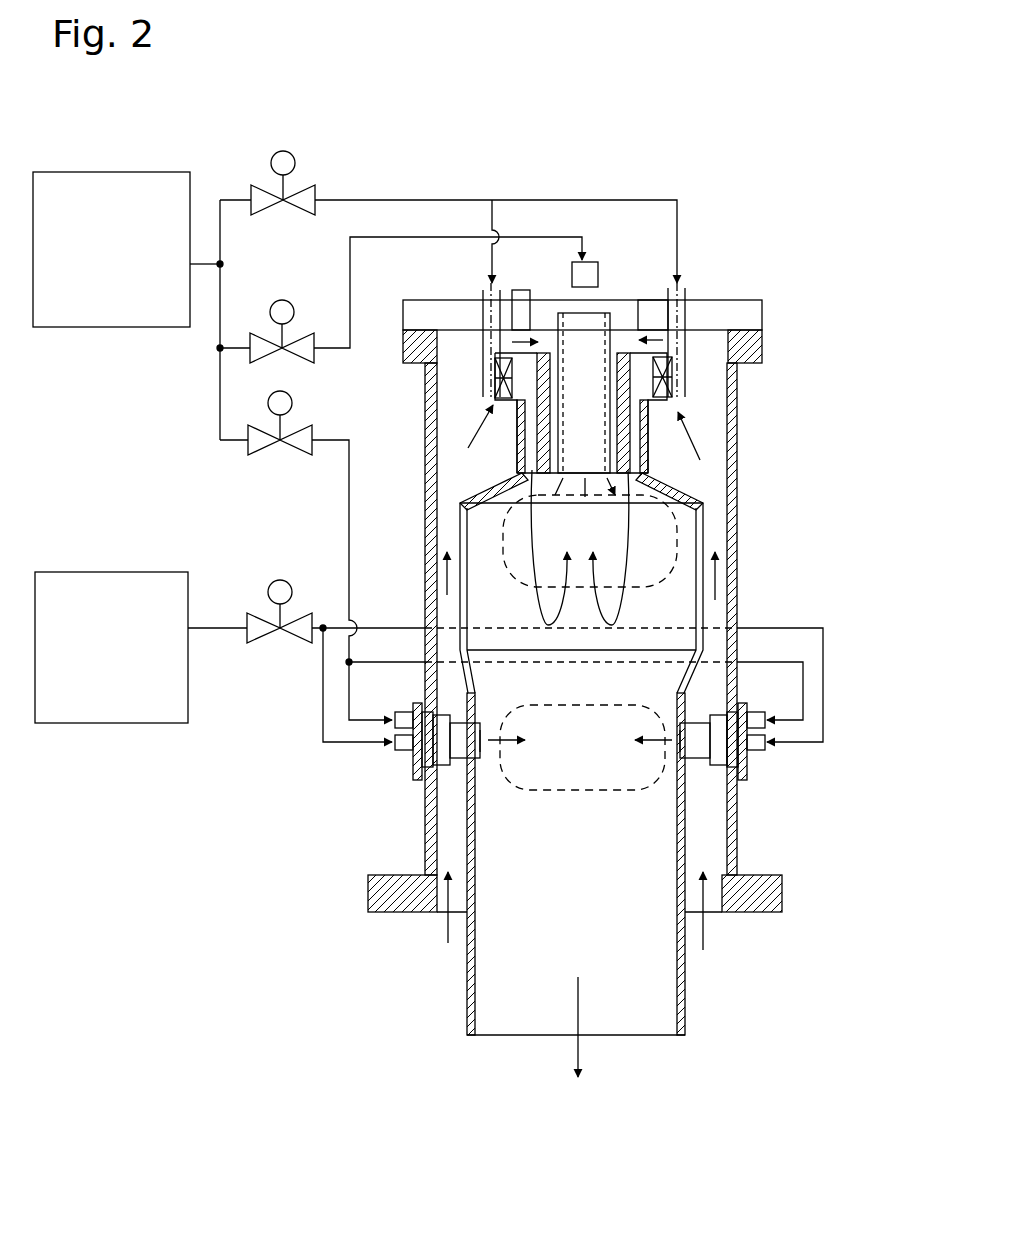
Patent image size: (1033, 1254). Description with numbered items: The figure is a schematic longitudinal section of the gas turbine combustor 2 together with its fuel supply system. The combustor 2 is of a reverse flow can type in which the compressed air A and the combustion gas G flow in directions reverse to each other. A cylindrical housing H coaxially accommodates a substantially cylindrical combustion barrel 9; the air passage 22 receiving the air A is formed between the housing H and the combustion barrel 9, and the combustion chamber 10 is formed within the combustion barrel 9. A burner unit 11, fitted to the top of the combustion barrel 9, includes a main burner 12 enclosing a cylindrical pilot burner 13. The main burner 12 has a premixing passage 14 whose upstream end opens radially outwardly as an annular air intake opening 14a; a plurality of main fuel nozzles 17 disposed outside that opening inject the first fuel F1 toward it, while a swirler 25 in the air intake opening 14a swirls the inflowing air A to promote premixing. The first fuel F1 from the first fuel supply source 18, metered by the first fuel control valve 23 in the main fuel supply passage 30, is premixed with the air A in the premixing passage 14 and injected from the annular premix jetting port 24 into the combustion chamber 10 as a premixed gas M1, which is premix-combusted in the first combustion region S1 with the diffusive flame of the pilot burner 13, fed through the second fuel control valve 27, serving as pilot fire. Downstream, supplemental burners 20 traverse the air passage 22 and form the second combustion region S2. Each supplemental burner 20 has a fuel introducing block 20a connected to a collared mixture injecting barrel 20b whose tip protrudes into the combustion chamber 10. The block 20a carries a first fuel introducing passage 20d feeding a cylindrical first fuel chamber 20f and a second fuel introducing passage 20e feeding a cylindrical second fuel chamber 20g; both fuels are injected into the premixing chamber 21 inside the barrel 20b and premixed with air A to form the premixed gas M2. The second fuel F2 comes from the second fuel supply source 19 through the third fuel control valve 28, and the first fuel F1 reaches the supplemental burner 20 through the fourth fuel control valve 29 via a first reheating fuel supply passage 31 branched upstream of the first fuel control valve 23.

The combustor 2 is at (724, 299).
The combustion barrel 9 is at (737, 532).
The combustion chamber 10 is at (600, 690).
The burner unit 11 is at (373, 472).
The main burner 12 is at (522, 460).
The pilot burner 13 is at (535, 447).
The premixing passage 14 is at (594, 409).
The air intake opening 14a is at (648, 392).
The main fuel nozzles 17 is at (487, 350).
The first fuel supply source 18 is at (166, 172).
The second fuel supply source 19 is at (166, 572).
The supplemental burner 20 is at (565, 760).
The fuel introducing block 20a is at (425, 770).
The mixture injecting barrel 20b is at (472, 788).
The first fuel introducing passage 20d is at (395, 718).
The second fuel introducing passage 20e is at (398, 745).
The first fuel chamber 20f is at (420, 782).
The second fuel chamber 20g is at (430, 705).
The premixing chamber 21 is at (478, 763).
The air passage 22 is at (688, 836).
The first fuel control valve 23 is at (300, 192).
The premix jetting port 24 is at (462, 506).
The swirler 25 is at (495, 375).
The second fuel control valve 27 is at (290, 334).
The third fuel control valve 28 is at (264, 613).
The fourth fuel control valve 29 is at (290, 426).
The main fuel supply passage 30 is at (445, 200).
The first reheating fuel supply passage 31 is at (220, 412).
The first fuel F1 is at (216, 280).
The second fuel F2 is at (230, 642).
The compressed air A is at (518, 325).
The combustion gas G is at (583, 1018).
The housing H is at (737, 614).
The premixed gas M1 is at (537, 590).
The premixed gas M2 is at (580, 727).
The first combustion region S1 is at (503, 545).
The second combustion region S2 is at (580, 792).